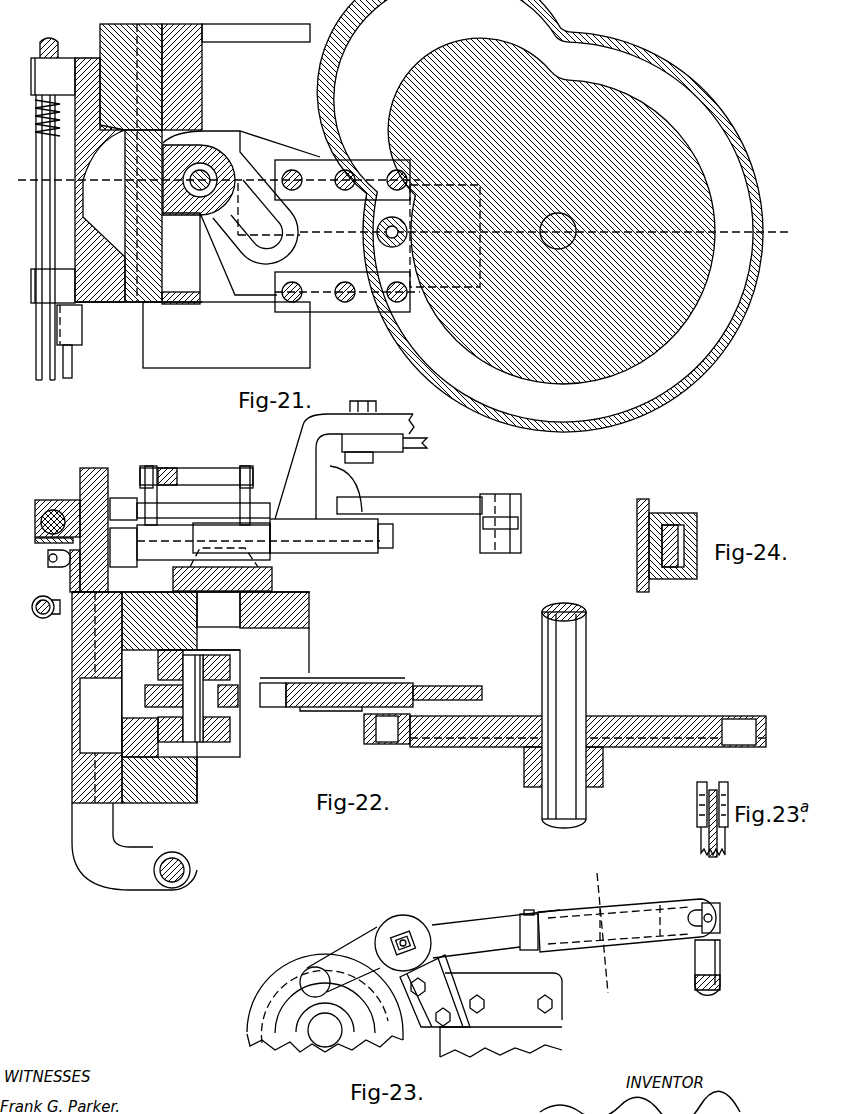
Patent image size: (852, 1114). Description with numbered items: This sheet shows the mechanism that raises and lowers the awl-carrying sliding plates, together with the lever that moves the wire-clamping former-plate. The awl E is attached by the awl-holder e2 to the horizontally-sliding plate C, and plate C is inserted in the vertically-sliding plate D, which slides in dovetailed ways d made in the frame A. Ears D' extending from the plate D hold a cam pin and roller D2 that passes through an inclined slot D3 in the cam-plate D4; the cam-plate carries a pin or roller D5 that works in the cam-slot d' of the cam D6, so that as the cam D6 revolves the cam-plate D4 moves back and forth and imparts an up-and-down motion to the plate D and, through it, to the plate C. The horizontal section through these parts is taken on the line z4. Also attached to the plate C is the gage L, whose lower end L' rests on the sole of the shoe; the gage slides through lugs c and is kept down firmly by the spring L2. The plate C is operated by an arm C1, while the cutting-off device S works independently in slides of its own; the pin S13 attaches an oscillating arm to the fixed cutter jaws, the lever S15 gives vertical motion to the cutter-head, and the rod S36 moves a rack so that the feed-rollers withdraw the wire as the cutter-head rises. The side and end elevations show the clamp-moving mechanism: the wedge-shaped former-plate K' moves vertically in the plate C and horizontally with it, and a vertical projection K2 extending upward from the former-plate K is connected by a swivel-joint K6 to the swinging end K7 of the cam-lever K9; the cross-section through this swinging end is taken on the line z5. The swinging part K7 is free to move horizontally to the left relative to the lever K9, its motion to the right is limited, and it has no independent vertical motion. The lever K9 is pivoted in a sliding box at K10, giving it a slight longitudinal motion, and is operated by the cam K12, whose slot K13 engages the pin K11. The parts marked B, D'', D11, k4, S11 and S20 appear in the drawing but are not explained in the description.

In FIG. 21, the frame A is at (204, 90).
In FIG. 22, the frame A is at (238, 697).
In FIG. 23, the frame A is at (481, 1006).
In FIG. 22, the block B is at (152, 737).
In FIG. 21, the horizontally-sliding plate C is at (138, 180).
In FIG. 22, the horizontally-sliding plate C is at (89, 635).
In FIG. 22, the arm C1 is at (134, 846).
In FIG. 21, the lugs c is at (53, 170).
In FIG. 22, the lugs c is at (48, 607).
In FIG. 21, the vertically-sliding plate D is at (131, 153).
In FIG. 21, the dovetailed ways d is at (226, 186).
In FIG. 22, the dovetailed ways d is at (164, 702).
In FIG. 21, the ears D' is at (199, 180).
In FIG. 22, the ears D' is at (235, 698).
In FIG. 21, the cam pin and roller D2 is at (222, 145).
In FIG. 21, the inclined slot D3 is at (257, 227).
In FIG. 22, the inclined slot D3 is at (194, 698).
In FIG. 21, the cam-plate D4 is at (377, 236).
In FIG. 21, the pin or roller D5 is at (392, 244).
In FIG. 21, the cam D6 is at (551, 211).
In FIG. 22, the cam D6 is at (648, 748).
In FIG. 21, the cam-slot d' is at (540, 216).
In FIG. 22, the cam-slot d' is at (739, 720).
In FIG. 22, the slide block D'' is at (387, 729).
In FIG. 22, the slide plate D11 is at (420, 684).
In FIG. 21, the awl E is at (57, 395).
In FIG. 22, the awl E is at (31, 582).
In FIG. 21, the awl-holder e2 is at (69, 325).
In FIG. 22, the former-plate K is at (57, 512).
In FIG. 22, the wedge-shaped former-plate K' is at (44, 562).
In FIG. 23A, the vertical projection K2 is at (726, 846).
In FIG. 23, the vertical projection K2 is at (722, 958).
In FIG. 23A, the swivel-joint K6 is at (697, 801).
In FIG. 23, the swivel-joint K6 is at (722, 903).
In FIG. 24, the swinging end of cam-lever K7 is at (647, 493).
In FIG. 23, the swinging end of cam-lever K7 is at (618, 925).
In FIG. 24, the cam-lever K9 is at (690, 513).
In FIG. 23, the cam-lever K9 is at (433, 951).
In FIG. 23, the sliding box K10 is at (406, 938).
In FIG. 23, the pin K11 is at (315, 982).
In FIG. 23, the cam K12 is at (325, 1003).
In FIG. 23, the cam slot K13 is at (324, 1015).
In FIG. 21, the pin k4 is at (73, 367).
In FIG. 21, the gage L is at (33, 237).
In FIG. 22, the gage L is at (28, 633).
In FIG. 21, the lower end of gage L' is at (32, 395).
In FIG. 21, the spring L2 is at (36, 118).
In FIG. 22, the cutting-off device S is at (398, 483).
In FIG. 22, the base block S11 is at (272, 579).
In FIG. 22, the pin S13 is at (251, 532).
In FIG. 22, the lever S15 is at (388, 420).
In FIG. 22, the plate S20 is at (384, 452).
In FIG. 22, the rod S36 is at (152, 468).
In FIG. 21, the section line z4 is at (403, 202).
In FIG. 23, the section line z5 is at (610, 929).